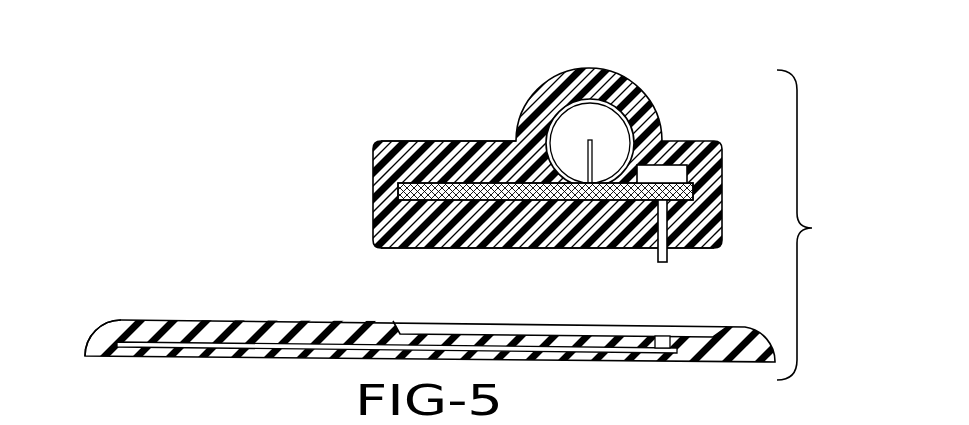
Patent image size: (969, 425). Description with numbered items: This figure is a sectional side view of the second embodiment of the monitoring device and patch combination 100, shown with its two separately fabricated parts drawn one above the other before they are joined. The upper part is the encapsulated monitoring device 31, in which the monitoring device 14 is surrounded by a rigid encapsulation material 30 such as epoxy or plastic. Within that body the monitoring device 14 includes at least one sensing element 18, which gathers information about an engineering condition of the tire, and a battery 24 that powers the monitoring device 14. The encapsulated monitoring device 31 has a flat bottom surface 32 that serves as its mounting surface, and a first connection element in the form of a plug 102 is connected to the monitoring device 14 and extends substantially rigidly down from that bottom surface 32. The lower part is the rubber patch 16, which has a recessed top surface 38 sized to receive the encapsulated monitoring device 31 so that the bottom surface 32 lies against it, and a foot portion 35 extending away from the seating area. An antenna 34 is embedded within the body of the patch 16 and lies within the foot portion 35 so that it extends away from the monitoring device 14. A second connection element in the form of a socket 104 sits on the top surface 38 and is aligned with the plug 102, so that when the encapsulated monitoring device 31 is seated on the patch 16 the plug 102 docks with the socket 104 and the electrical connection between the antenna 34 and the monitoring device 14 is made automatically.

The monitoring device 14 is at (486, 180).
The patch 16 is at (152, 368).
The sensing element 18 is at (673, 171).
The battery 24 is at (580, 117).
The encapsulation material 30 is at (378, 163).
The encapsulated monitoring device 31 is at (423, 131).
The bottom surface 32 is at (460, 249).
The antenna 34 is at (276, 357).
The foot portion 35 is at (100, 327).
The recessed top surface 38 is at (395, 332).
The combination 100 is at (820, 225).
The plug 102 is at (664, 263).
The socket 104 is at (662, 336).